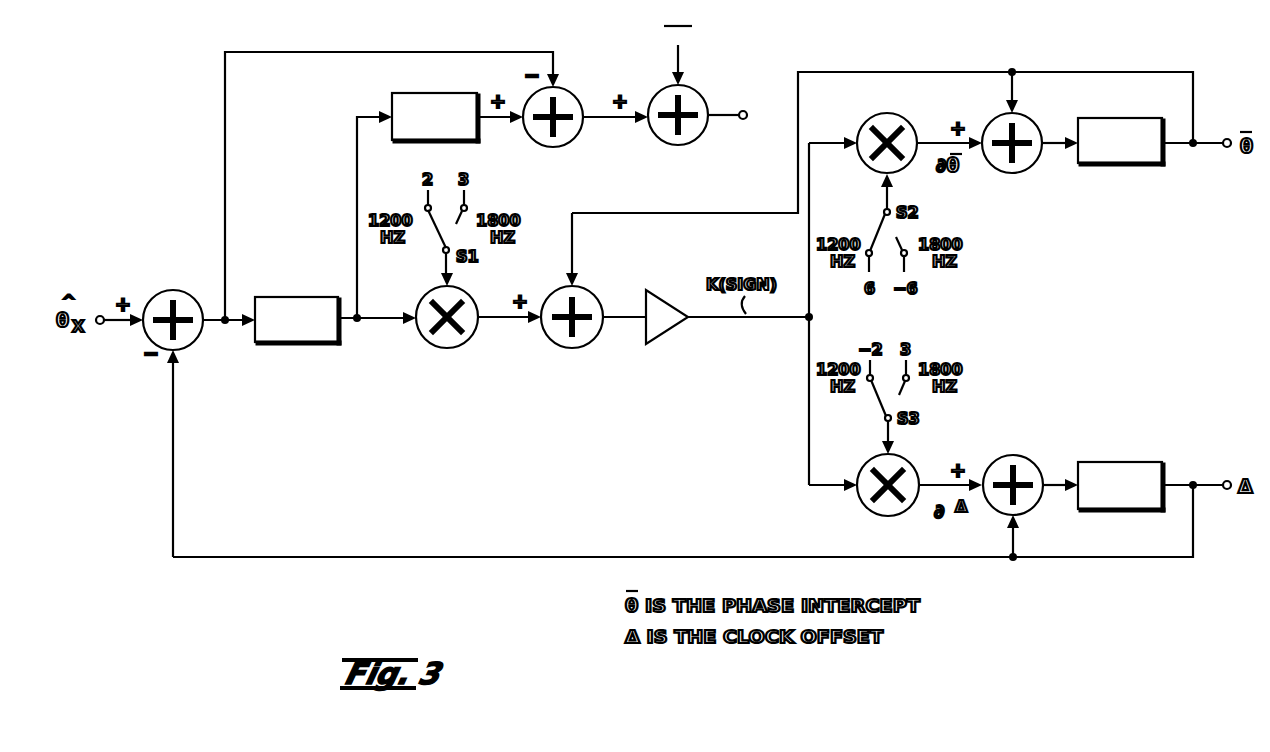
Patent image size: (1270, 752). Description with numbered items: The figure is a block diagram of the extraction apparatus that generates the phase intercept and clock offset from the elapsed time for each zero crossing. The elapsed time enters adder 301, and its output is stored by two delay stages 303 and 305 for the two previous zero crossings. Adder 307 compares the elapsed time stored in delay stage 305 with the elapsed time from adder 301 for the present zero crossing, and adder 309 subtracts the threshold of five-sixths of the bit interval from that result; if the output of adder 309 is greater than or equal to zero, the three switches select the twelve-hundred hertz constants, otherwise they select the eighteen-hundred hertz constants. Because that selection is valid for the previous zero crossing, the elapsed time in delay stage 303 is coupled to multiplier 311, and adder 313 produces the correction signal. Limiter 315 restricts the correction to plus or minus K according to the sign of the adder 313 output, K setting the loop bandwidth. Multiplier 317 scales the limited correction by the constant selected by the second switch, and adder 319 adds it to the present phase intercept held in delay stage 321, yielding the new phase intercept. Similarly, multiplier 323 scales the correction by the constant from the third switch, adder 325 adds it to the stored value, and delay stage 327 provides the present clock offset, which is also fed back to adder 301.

The adder 301 is at (193, 343).
The delay stage 303 is at (288, 296).
The delay stage 305 is at (430, 92).
The adder 307 is at (572, 140).
The adder 309 is at (690, 138).
The multiplier 311 is at (452, 347).
The adder 313 is at (585, 345).
The amplitude limiter 315 is at (665, 325).
The multiplier 317 is at (895, 113).
The adder 319 is at (1025, 170).
The delay stage 321 is at (1118, 165).
The multiplier 323 is at (888, 508).
The adder 325 is at (1025, 466).
The delay stage 327 is at (1140, 461).